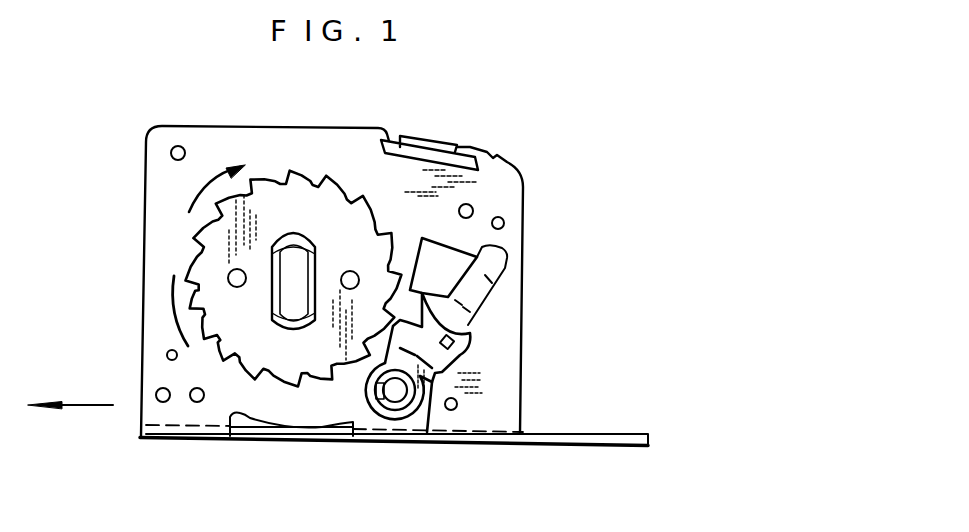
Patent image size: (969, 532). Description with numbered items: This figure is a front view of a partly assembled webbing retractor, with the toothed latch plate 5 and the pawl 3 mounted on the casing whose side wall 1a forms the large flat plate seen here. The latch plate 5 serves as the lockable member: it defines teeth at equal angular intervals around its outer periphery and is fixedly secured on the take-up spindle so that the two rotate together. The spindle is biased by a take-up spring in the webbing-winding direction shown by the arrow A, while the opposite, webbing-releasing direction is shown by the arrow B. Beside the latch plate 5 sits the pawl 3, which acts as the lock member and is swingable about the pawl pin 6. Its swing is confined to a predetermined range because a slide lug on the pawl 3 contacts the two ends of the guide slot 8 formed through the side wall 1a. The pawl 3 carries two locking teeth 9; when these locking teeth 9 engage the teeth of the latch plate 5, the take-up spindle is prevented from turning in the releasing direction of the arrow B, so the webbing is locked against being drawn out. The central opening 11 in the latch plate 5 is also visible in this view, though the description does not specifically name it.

The side wall 1a is at (503, 179).
The pawl 3 is at (433, 362).
The latch plate 5 is at (277, 198).
The pawl pin 6 is at (393, 398).
The guide slot 8 is at (447, 257).
The locking teeth 9 is at (450, 364).
The slot 11 is at (292, 298).
The arrow A is at (180, 327).
The arrow B is at (203, 203).